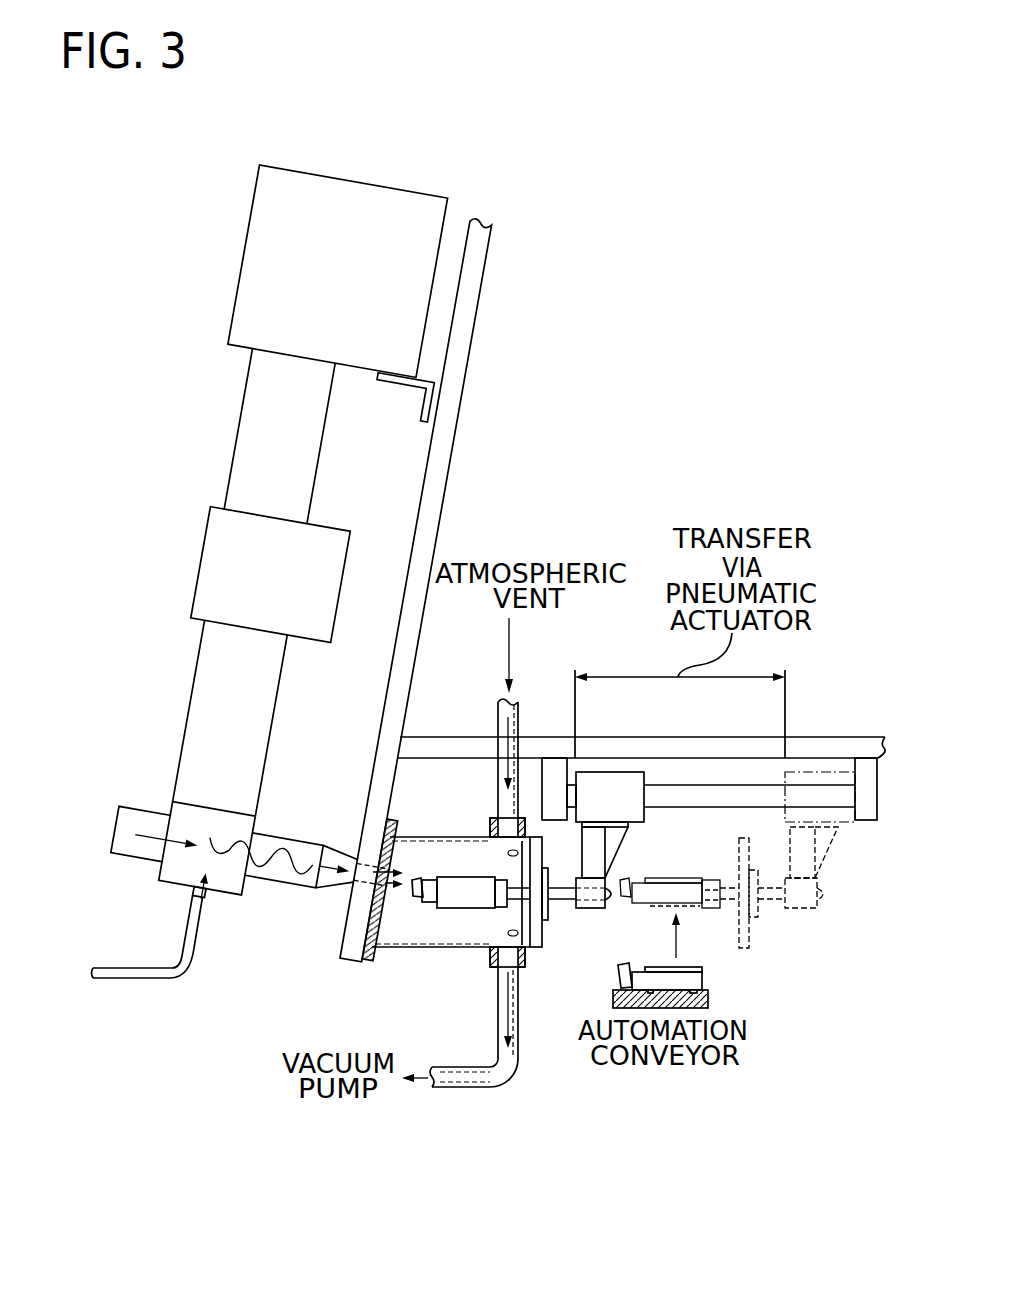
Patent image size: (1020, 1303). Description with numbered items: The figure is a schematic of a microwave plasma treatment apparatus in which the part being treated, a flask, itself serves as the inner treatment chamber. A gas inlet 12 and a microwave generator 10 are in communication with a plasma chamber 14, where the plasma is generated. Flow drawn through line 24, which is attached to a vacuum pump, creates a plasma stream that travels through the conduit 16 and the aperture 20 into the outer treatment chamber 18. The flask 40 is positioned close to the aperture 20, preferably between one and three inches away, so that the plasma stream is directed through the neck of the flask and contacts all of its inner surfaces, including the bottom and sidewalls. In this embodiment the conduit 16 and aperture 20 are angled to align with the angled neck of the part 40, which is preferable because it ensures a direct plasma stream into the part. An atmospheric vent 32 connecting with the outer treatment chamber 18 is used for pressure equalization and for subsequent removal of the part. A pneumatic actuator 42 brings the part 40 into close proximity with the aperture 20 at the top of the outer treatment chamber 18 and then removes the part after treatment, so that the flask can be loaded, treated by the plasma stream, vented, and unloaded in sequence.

The microwave generator 10 is at (180, 475).
The gas inlet 12 is at (152, 980).
The plasma chamber 14 is at (172, 808).
The conduit 16 is at (283, 847).
The outer treatment chamber 18 is at (450, 933).
The aperture 20 is at (350, 873).
The line 24 is at (488, 1088).
The atmospheric vent 32 is at (507, 730).
The flask 40 is at (430, 897).
The pneumatic actuator 42 is at (628, 798).